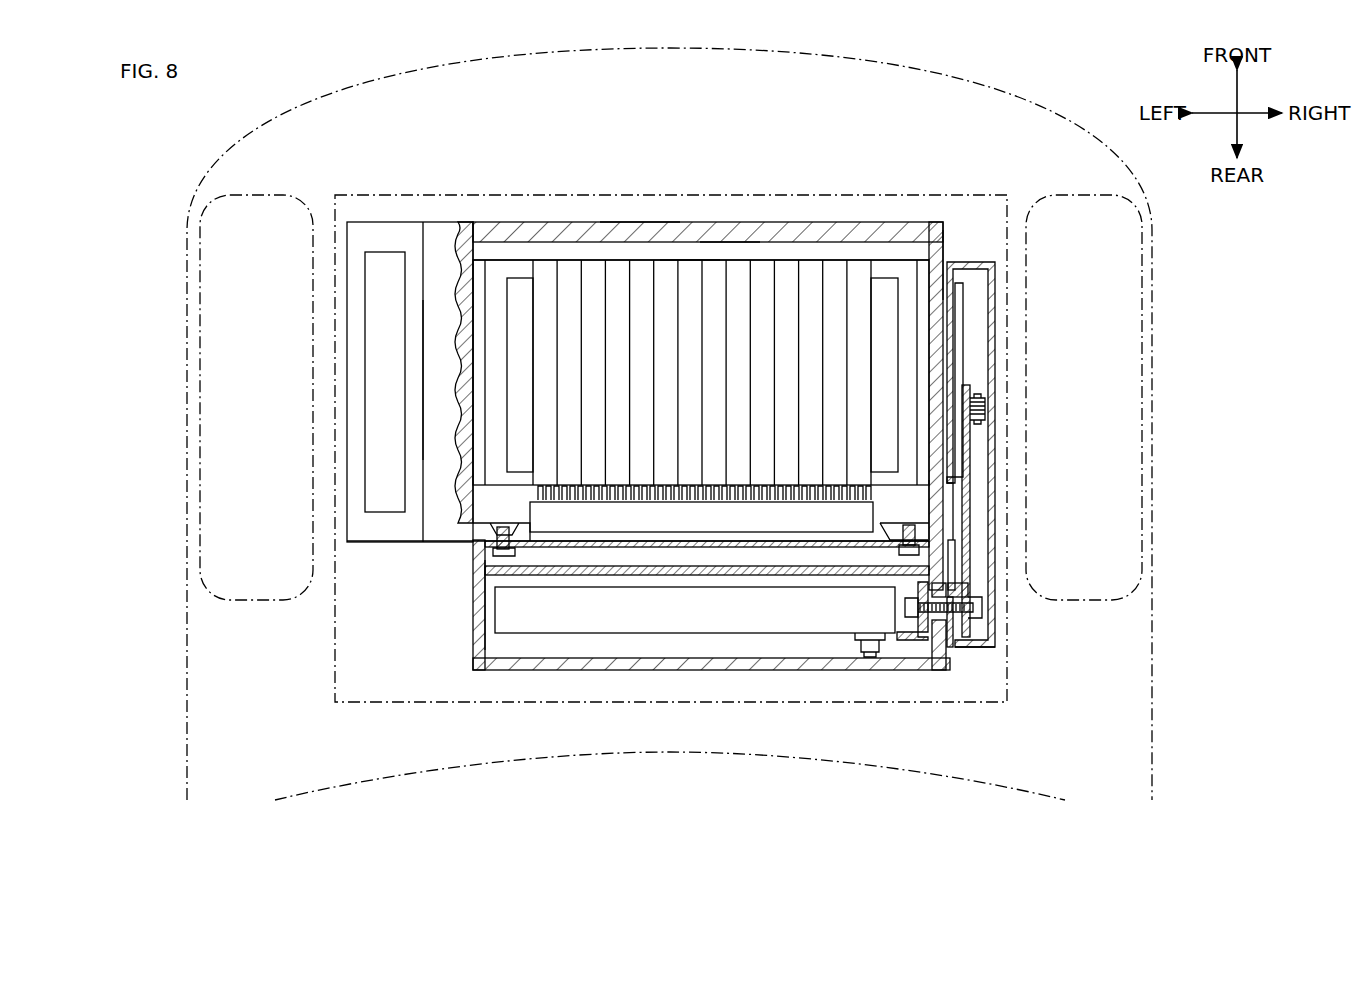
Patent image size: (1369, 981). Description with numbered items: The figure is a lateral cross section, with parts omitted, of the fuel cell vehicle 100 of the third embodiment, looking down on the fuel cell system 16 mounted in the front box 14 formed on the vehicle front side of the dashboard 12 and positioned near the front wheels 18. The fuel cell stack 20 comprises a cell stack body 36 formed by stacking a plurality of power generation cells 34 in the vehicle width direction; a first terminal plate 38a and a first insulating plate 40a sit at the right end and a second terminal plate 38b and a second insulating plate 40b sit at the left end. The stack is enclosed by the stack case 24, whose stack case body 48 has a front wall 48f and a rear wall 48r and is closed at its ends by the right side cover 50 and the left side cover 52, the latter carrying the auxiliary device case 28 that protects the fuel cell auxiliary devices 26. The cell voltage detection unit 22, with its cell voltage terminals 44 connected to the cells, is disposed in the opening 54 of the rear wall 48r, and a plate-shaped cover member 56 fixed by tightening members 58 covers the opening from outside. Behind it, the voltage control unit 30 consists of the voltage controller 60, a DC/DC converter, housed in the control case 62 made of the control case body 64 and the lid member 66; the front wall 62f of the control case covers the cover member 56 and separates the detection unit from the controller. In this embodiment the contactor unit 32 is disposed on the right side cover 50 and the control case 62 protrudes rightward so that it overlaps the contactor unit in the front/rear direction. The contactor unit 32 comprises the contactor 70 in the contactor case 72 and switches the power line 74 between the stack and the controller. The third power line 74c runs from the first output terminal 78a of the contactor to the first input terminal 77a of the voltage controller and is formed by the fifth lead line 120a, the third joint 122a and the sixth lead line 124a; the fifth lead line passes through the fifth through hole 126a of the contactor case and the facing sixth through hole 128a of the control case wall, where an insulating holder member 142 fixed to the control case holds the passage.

The fuel cell vehicle 100 is at (332, 66).
The dashboard 12 is at (400, 757).
The front box 14 is at (380, 195).
The fuel cell system 16 is at (557, 220).
The front wheels 18 is at (200, 260).
The fuel cell stack 20 is at (701, 311).
The cell voltage detection unit 22 is at (677, 533).
The stack case 24 is at (724, 220).
The fuel cell auxiliary devices 26 is at (365, 282).
The auxiliary device case 28 is at (365, 238).
The voltage control unit 30 is at (674, 639).
The contactor unit 32 is at (1117, 481).
The power generation cells 34 is at (760, 270).
The cell stack body 36 is at (688, 250).
The first terminal plate 38a is at (892, 278).
The second terminal plate 38b is at (522, 278).
The first insulating plate 40a is at (880, 275).
The second insulating plate 40b is at (493, 275).
The cell voltage terminals 44 is at (607, 497).
The stack case body 48 is at (590, 235).
The front wall 48f is at (636, 228).
The rear wall 48r is at (893, 521).
The right side cover 50 is at (944, 240).
The left side cover 52 is at (438, 235).
The opening 54 is at (528, 516).
The cover member 56 is at (556, 548).
The tightening members 58 is at (495, 550).
The voltage controller 60 is at (506, 613).
The control case 62 is at (472, 673).
The front wall 62f is at (606, 576).
The control case body 64 is at (471, 592).
The lid member 66 is at (530, 664).
The contactor 70 is at (955, 340).
The contactor case 72 is at (992, 293).
The power line 74 is at (990, 641).
The third power line 74c is at (972, 458).
The first input terminal 77a is at (870, 655).
The first output terminal 78a is at (986, 408).
The fifth lead line 120a is at (972, 482).
The third joint 122a is at (902, 607).
The sixth lead line 124a is at (905, 642).
The fifth through hole 126a is at (975, 560).
The sixth through hole 128a is at (975, 598).
The holder member 142 is at (960, 648).